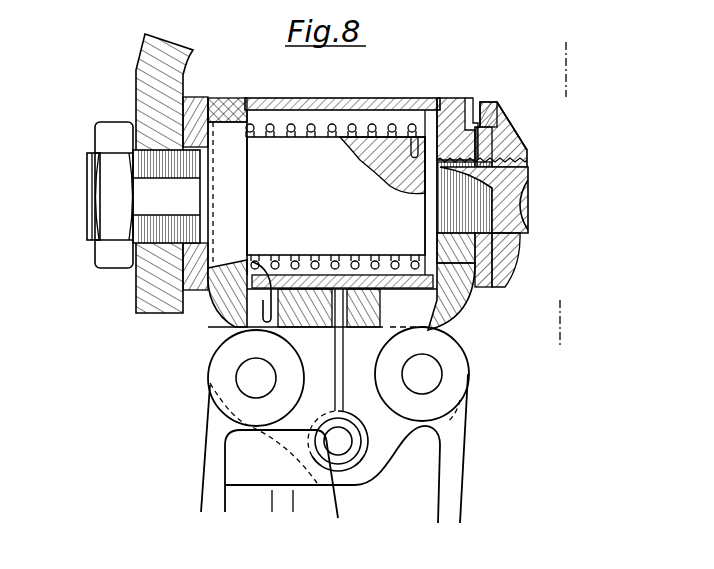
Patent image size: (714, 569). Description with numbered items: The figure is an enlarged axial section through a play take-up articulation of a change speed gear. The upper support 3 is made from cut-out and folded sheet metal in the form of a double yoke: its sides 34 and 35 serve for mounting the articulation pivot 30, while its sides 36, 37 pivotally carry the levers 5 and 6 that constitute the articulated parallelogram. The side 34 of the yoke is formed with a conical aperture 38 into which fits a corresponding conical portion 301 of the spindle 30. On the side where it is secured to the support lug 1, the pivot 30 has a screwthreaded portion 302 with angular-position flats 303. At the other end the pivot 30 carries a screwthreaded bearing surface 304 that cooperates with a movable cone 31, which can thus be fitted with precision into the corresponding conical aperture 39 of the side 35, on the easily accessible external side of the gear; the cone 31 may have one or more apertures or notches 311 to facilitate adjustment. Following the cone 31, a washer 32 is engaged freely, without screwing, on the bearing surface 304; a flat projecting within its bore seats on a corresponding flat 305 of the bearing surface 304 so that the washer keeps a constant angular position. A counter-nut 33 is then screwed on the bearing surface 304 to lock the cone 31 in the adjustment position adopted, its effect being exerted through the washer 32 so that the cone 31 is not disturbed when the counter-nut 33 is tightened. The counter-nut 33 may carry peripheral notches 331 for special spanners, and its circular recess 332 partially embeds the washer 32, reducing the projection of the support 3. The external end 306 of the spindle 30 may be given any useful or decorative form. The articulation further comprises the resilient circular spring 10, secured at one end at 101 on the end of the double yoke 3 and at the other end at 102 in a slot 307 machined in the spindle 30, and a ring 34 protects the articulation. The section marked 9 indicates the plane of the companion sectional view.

The support lug 1 is at (155, 65).
The upper support 3 is at (226, 324).
The lever 5 is at (447, 454).
The lever 6 is at (213, 453).
The section line 9- 9 is at (566, 42).
The circular spring 10 is at (373, 127).
The spring securing point 101 is at (250, 304).
The spring securing point 102 is at (422, 153).
The articulation pivot 30 is at (317, 177).
The conical portion 301 is at (250, 175).
The screwthreaded portion 302 is at (127, 228).
The angular-position flats 303 is at (152, 202).
The screwthreaded bearing surface 304 is at (492, 228).
The flat 305 is at (527, 168).
The external end 306 is at (522, 198).
The slot 307 is at (387, 150).
The movable cone 31 is at (448, 133).
The aperture or notch 311 is at (497, 136).
The washer 32 is at (492, 257).
The counter-nut 33 is at (522, 149).
The peripheral notches 331 is at (520, 296).
The circular recess 332 is at (492, 120).
The ring 34 is at (318, 104).
The yoke side 35 is at (466, 99).
The yoke side 36 is at (357, 362).
The yoke side 37 is at (363, 426).
The conical aperture 38 is at (229, 98).
The conical aperture 39 is at (475, 103).